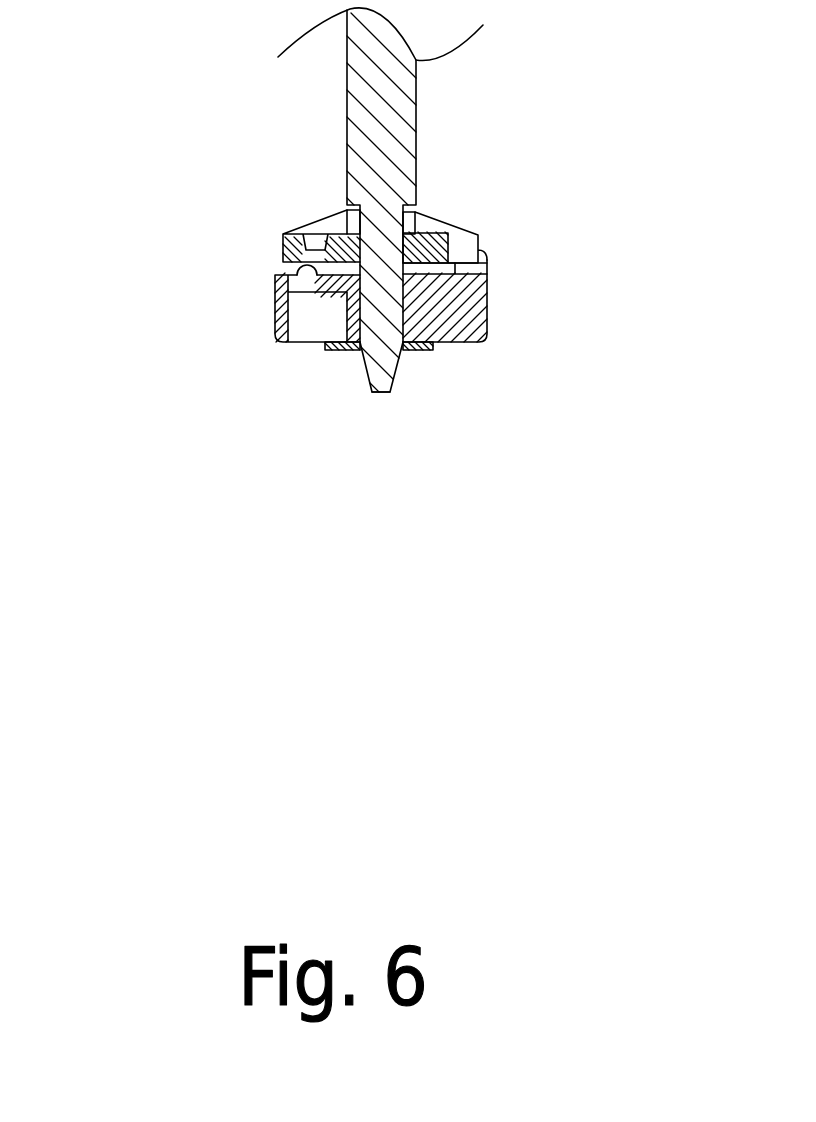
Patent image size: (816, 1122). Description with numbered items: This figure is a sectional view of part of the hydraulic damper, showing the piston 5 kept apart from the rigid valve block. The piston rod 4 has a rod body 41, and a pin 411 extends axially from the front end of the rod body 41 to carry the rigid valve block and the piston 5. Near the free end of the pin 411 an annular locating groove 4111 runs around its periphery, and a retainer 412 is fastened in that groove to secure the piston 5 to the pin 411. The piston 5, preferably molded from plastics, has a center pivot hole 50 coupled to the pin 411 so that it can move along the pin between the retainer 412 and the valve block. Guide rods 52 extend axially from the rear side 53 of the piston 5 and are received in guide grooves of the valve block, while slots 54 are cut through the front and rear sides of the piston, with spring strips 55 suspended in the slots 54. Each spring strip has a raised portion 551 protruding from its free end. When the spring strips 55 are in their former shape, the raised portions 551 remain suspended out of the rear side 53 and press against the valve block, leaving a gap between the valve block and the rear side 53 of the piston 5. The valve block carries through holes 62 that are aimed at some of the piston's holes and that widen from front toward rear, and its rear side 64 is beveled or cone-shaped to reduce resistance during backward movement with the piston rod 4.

The piston rod 4 is at (338, 101).
The rod body 41 is at (347, 150).
The pin 411 is at (405, 346).
The annular locating groove 4111 is at (380, 393).
The retainer 412 is at (425, 349).
The piston 5 is at (523, 343).
The center pivot hole 50 is at (403, 297).
The guide rods 52 is at (473, 270).
The rear side 53 is at (473, 275).
The slots 54 is at (323, 325).
The spring strips 55 is at (318, 290).
The raised portion 551 is at (300, 276).
The through holes 62 is at (300, 233).
The rear side 64 is at (347, 210).